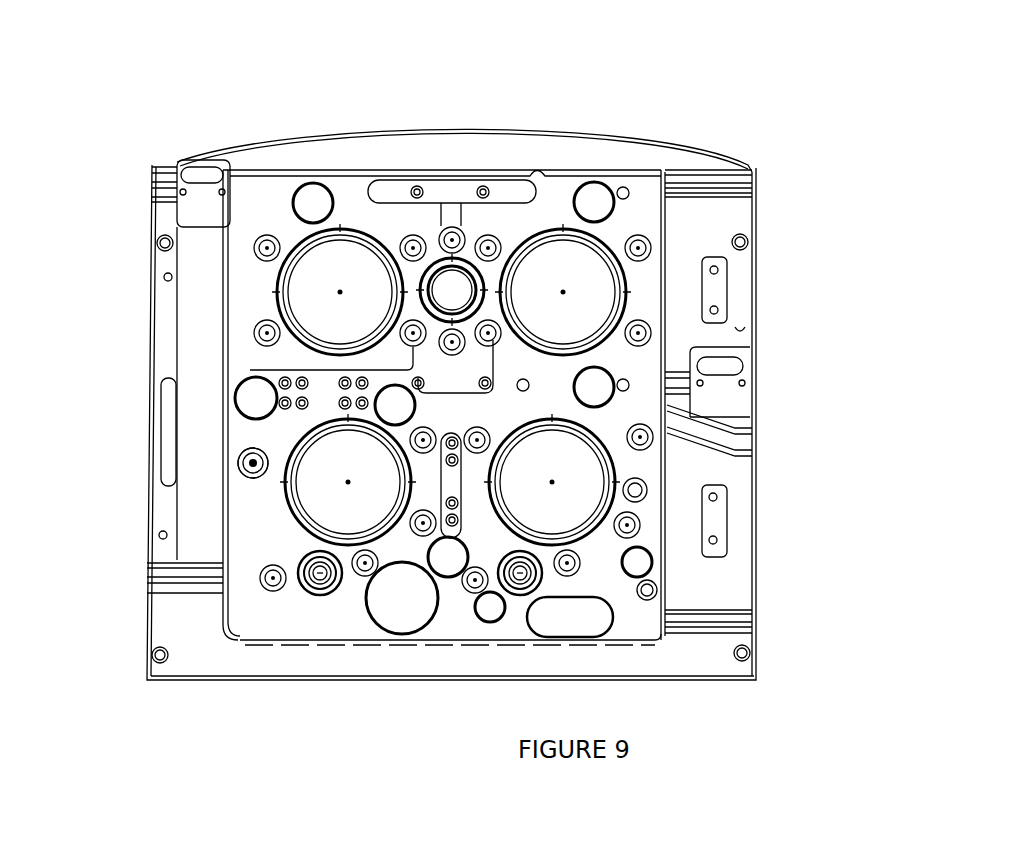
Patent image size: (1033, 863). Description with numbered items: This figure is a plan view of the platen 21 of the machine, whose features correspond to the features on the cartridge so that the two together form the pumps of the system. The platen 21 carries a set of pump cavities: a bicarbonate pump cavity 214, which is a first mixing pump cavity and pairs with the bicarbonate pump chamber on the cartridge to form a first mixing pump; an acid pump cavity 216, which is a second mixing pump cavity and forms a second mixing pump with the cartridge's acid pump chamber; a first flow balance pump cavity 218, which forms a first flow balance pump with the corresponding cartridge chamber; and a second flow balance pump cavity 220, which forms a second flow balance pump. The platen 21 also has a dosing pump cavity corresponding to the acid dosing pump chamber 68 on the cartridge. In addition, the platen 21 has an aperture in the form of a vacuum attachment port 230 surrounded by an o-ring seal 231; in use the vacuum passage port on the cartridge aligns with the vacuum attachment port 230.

The platen 21 is at (643, 200).
The second flow balance pump cavity 220 is at (312, 262).
The first flow balance pump cavity 218 is at (583, 273).
The acid pump cavity 216 is at (315, 462).
The bicarbonate pump cavity 214 is at (583, 462).
The vacuum attachment port 230 is at (238, 465).
The o-ring seal 231 is at (255, 478).
The acid dosing pump chamber 68 is at (316, 580).